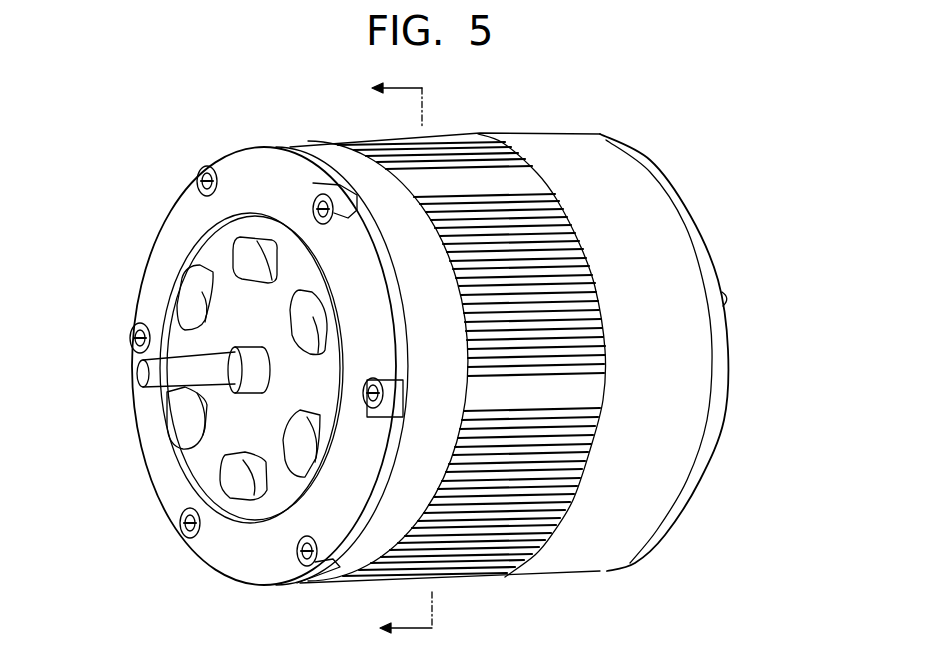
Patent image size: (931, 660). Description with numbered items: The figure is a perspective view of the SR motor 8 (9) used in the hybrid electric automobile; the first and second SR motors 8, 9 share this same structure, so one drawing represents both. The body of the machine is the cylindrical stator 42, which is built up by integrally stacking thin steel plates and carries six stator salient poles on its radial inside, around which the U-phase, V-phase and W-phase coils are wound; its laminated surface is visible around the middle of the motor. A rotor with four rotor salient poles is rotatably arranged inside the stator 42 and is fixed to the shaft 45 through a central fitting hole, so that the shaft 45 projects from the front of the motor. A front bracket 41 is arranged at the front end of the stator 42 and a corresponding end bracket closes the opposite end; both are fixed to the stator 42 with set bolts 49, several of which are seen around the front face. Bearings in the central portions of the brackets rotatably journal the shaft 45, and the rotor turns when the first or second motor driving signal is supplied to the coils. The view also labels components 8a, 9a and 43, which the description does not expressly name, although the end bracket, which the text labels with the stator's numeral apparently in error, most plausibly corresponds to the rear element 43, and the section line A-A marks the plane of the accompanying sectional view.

The first SR motor 8 is at (598, 104).
The second SR motor 9 is at (624, 104).
The output shaft 8a is at (150, 341).
The output shaft 9a is at (170, 341).
The front bracket 41 is at (318, 150).
The stator 42 is at (450, 170).
The rear housing 43 is at (664, 297).
The shaft 45 is at (180, 370).
The set bolts 49 is at (205, 166).